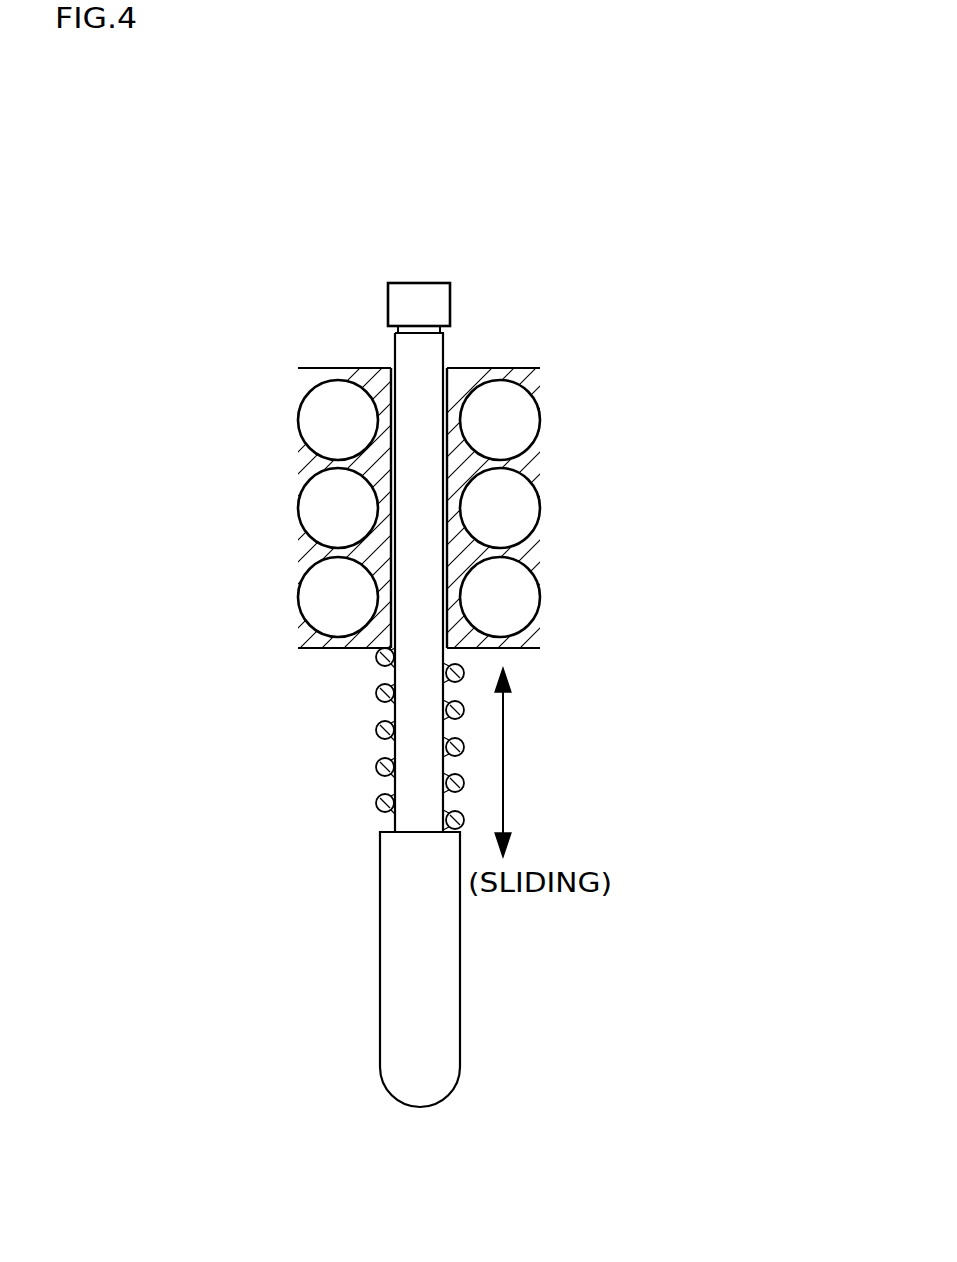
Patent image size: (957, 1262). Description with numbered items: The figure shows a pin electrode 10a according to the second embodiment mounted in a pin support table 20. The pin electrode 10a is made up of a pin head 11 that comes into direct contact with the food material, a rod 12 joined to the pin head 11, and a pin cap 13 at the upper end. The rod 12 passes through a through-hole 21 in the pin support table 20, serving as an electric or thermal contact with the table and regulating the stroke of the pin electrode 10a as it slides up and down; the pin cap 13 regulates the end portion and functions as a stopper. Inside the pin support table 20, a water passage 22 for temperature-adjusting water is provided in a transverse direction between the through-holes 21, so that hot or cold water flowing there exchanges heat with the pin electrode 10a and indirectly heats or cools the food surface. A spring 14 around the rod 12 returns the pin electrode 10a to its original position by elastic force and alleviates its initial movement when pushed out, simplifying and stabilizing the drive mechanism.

The pin electrode 10a is at (453, 178).
The pin head 11 is at (387, 916).
The rod 12 is at (410, 622).
The pin cap 13 is at (398, 307).
The spring 14 is at (375, 767).
The pin support table 20 is at (455, 465).
The through-hole 21 is at (447, 387).
The water passage 22 is at (315, 418).